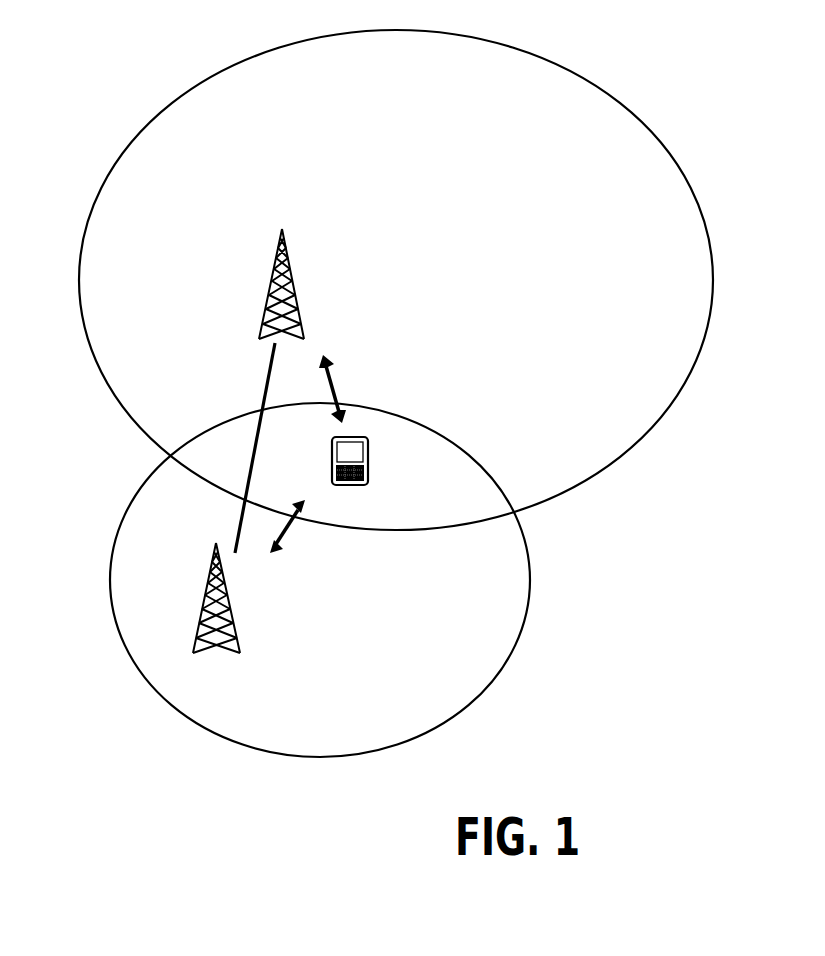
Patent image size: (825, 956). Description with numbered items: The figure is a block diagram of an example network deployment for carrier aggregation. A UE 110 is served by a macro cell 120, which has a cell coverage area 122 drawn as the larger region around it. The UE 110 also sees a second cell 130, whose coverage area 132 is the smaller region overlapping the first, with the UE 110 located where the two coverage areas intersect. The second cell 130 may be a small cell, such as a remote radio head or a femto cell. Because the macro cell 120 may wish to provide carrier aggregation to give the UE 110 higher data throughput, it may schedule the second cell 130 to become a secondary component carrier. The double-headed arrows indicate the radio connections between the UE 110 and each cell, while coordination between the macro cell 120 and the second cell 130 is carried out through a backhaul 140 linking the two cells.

The UE 110 is at (358, 484).
The macro cell 120 is at (268, 278).
The cell coverage area 122 is at (685, 382).
The second cell 130 is at (238, 622).
The coverage area 132 is at (487, 688).
The backhaul 140 is at (263, 388).